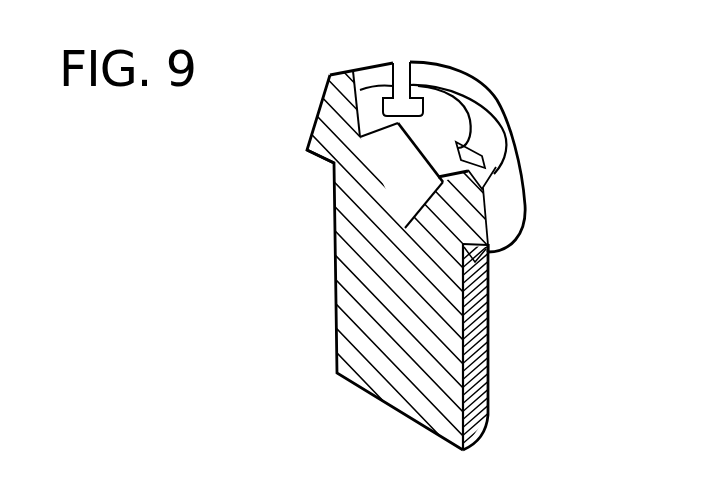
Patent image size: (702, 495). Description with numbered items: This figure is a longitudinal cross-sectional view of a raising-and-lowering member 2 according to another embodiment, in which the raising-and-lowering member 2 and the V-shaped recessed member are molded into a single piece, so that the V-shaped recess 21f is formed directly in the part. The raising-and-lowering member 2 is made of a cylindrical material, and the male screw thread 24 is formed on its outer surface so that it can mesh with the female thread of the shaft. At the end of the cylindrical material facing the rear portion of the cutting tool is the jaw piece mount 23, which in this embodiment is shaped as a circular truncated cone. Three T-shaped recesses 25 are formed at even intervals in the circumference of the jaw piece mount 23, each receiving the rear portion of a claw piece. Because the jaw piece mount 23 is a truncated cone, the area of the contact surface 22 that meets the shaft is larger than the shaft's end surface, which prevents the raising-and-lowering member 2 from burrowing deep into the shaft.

The raising-and-lowering member 2 is at (530, 179).
The jaw piece mount 23 is at (360, 78).
The T-shaped recess 25 is at (404, 85).
The V-shaped recess 21f is at (408, 166).
The contact surface 22 is at (322, 163).
The male screw thread 24 is at (488, 378).